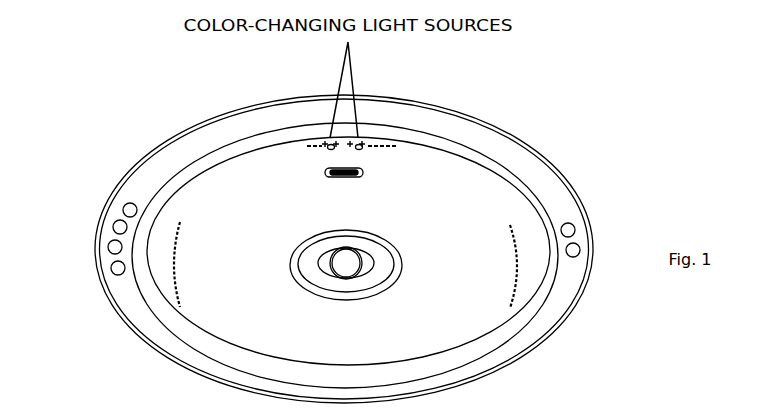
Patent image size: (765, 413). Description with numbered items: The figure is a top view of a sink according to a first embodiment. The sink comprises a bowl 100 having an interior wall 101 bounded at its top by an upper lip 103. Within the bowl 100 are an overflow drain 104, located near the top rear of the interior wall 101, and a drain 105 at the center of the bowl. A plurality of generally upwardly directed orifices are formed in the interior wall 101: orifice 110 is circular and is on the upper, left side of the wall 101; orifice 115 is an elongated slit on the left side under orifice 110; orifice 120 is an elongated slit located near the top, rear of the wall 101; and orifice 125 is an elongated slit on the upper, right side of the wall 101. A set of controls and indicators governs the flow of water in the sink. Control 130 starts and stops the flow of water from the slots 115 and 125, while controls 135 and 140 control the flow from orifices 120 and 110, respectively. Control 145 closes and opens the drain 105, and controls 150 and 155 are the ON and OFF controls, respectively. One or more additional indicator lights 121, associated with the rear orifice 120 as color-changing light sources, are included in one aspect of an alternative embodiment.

The bowl 100 is at (152, 347).
The interior wall 101 is at (486, 175).
The upper lip 103 is at (553, 178).
The overflow drain 104 is at (327, 172).
The drain 105 is at (332, 250).
The orifice 110 is at (157, 262).
The orifice 115 is at (177, 235).
The orifice 120 is at (377, 143).
The indicator lights 121 is at (330, 141).
The orifice 125 is at (513, 228).
The control 130 is at (111, 268).
The control 135 is at (108, 247).
The control 140 is at (112, 227).
The control 145 is at (123, 205).
The ON control 150 is at (575, 229).
The OFF control 155 is at (580, 250).